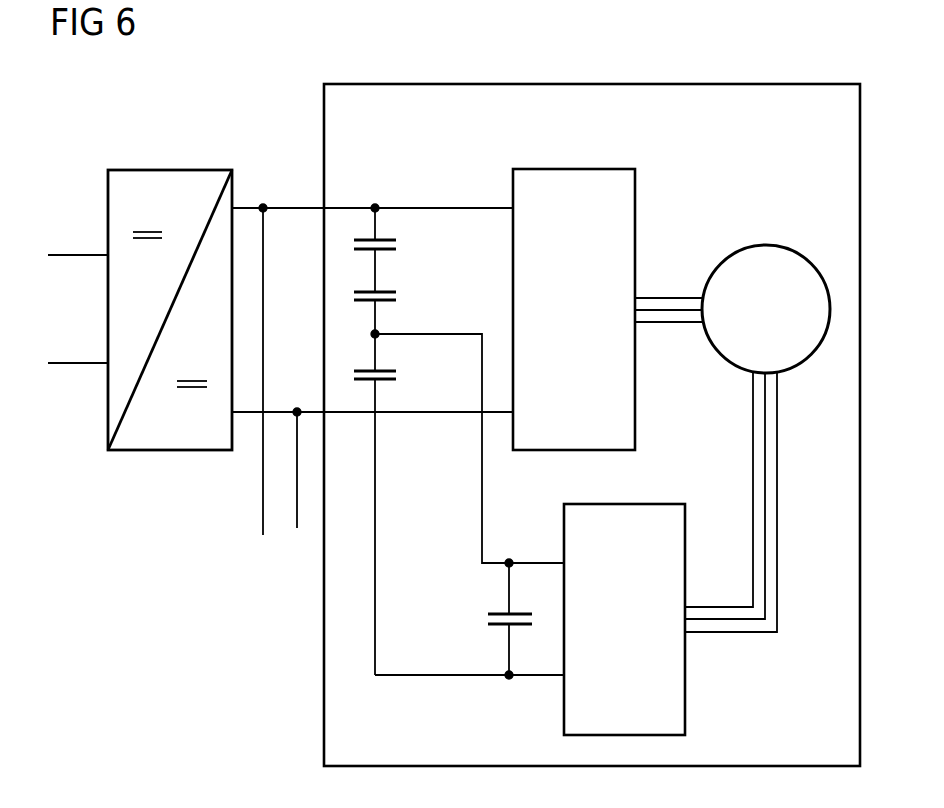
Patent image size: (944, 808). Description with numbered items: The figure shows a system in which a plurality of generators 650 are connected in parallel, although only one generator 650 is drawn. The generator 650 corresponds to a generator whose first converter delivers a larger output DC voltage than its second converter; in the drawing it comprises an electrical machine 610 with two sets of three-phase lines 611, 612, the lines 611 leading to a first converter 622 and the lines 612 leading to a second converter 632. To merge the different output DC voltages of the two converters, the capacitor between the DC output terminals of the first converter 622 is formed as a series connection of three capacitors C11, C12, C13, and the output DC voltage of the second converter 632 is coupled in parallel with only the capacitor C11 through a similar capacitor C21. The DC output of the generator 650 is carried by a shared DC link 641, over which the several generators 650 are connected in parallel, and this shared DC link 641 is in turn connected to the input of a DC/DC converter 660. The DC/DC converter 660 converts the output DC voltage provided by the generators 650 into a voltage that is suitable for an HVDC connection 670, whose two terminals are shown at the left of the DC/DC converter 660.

The electric machine 610 is at (765, 245).
The first winding system lines 611 is at (668, 297).
The second winding system lines 612 is at (712, 607).
The first inverter 622 is at (574, 169).
The second inverter 632 is at (685, 683).
The shared DC link 641 is at (297, 528).
The generator 650 is at (592, 84).
The DC/DC converter 660 is at (173, 170).
The HVDC connection 670 is at (80, 254).
The capacitor C11 is at (400, 375).
The capacitor C12 is at (400, 296).
The capacitor C13 is at (400, 244).
The capacitor C21 is at (486, 620).